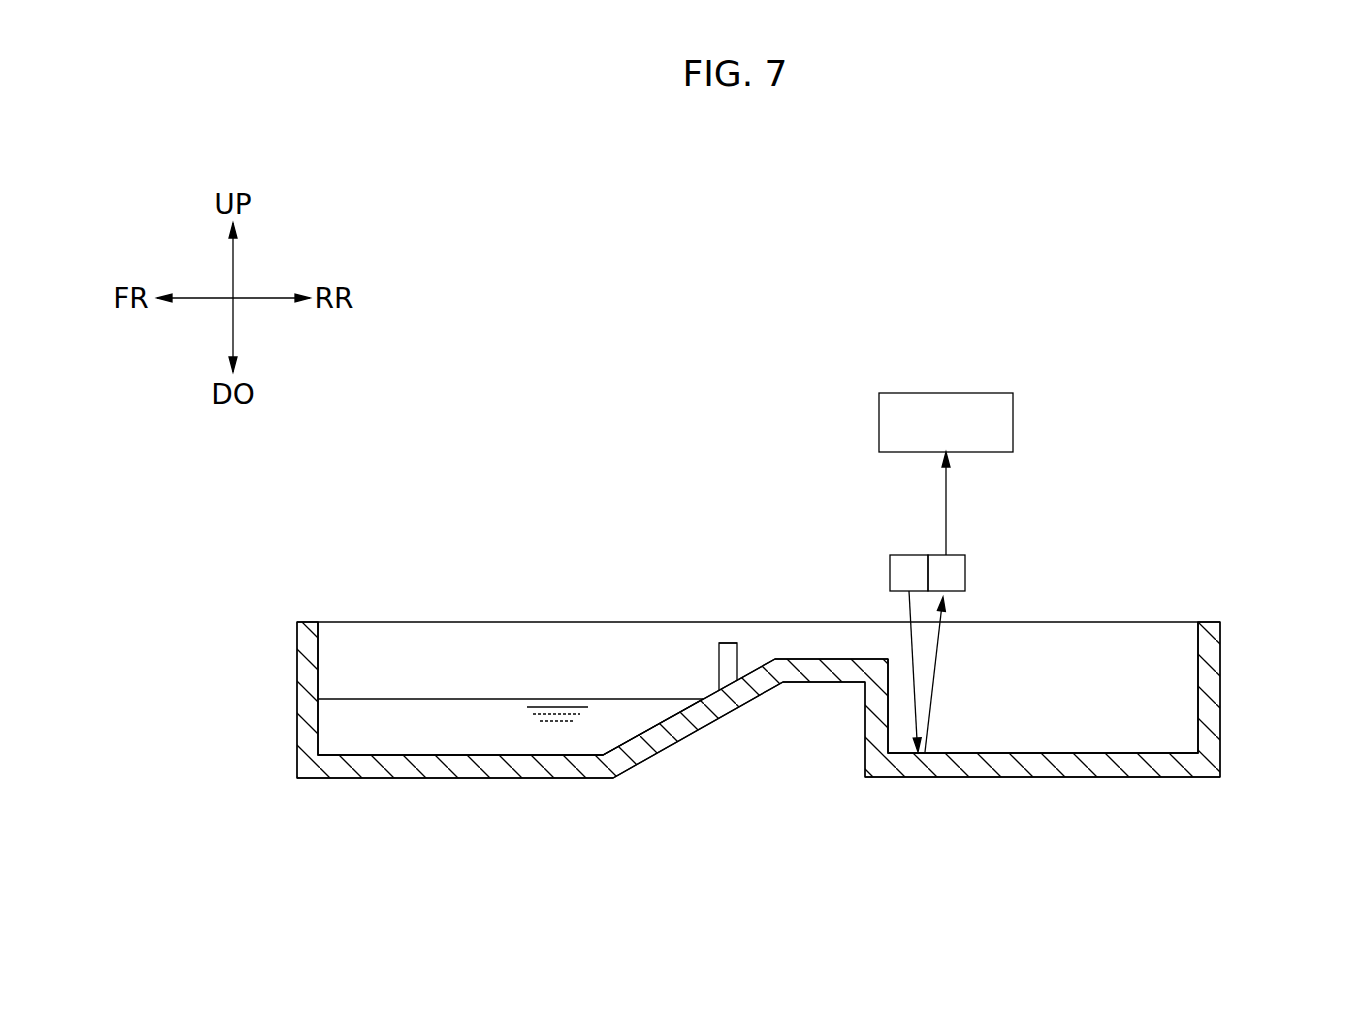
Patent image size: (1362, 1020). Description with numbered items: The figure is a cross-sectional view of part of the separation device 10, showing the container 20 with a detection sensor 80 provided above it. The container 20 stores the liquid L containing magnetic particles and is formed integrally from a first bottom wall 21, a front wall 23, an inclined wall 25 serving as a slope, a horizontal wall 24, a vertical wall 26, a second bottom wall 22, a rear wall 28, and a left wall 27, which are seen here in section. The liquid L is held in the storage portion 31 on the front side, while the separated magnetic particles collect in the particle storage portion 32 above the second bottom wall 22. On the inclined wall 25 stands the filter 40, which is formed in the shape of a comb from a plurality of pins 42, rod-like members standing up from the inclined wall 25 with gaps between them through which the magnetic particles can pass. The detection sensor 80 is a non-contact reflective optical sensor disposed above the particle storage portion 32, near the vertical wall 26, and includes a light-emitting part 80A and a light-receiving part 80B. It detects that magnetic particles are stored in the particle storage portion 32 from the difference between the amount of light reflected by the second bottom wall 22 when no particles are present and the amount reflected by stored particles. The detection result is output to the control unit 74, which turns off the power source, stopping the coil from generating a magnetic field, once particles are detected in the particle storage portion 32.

The separation device 10 is at (1236, 432).
The container 20 is at (304, 602).
The first bottom wall 21 is at (448, 766).
The second bottom wall 22 is at (1037, 766).
The front wall 23 is at (305, 692).
The horizontal wall 24 is at (815, 685).
The inclined wall 25 is at (690, 735).
The vertical wall 26 is at (870, 735).
The left wall 27 is at (523, 614).
The rear wall 28 is at (1207, 690).
The storage portion 31 is at (417, 656).
The particle storage portion 32 is at (1154, 649).
The filter 40 is at (721, 634).
The pin 42 is at (727, 658).
The control unit 74 is at (1010, 416).
The detection sensor 80 is at (980, 563).
The light-emitting part 80A is at (903, 572).
The light-receiving part 80B is at (962, 577).
The liquid L is at (472, 712).